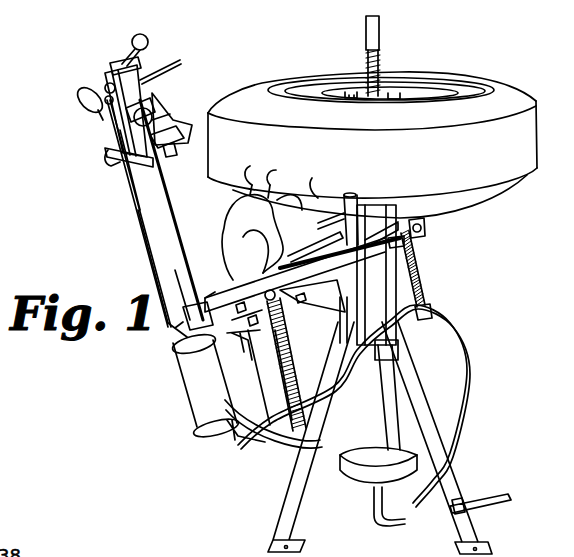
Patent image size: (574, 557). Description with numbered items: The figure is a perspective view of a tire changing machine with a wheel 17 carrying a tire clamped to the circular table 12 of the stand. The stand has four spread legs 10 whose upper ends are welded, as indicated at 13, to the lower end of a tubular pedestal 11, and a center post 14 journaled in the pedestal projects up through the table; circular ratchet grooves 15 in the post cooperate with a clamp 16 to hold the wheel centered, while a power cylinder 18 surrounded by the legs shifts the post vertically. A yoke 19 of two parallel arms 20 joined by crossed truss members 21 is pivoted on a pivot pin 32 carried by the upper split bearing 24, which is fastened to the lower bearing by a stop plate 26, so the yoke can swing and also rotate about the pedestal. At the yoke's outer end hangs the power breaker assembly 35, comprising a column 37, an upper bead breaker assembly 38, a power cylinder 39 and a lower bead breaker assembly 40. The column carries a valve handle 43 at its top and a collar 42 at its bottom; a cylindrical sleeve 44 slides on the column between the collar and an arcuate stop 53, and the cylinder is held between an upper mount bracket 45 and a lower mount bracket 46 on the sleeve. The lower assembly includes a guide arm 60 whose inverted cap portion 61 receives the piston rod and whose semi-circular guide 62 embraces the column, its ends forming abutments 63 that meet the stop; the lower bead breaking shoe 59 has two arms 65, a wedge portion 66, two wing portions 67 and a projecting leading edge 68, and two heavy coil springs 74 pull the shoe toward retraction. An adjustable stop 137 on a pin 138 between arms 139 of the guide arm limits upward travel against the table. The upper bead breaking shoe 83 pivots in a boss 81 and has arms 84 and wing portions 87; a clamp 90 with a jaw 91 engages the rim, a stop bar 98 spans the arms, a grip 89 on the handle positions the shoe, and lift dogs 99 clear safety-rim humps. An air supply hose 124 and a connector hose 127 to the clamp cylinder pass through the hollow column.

The leg 10 is at (300, 512).
The pedestal 11 is at (416, 283).
The circular table 12 is at (470, 197).
The weld 13 is at (402, 363).
The center post 14 is at (379, 24).
The circular ratchet grooves 15 is at (381, 63).
The clamp 16 is at (388, 93).
The wheel 17 is at (456, 89).
The power cylinder 18 is at (375, 480).
The yoke 19 is at (406, 248).
The yoke arm 20 is at (396, 283).
The truss member 21 is at (350, 208).
The upper split bearing 24 is at (375, 220).
The stop plate 26 is at (347, 337).
The pivot pin 32 is at (427, 228).
The power breaker assembly 35 is at (152, 255).
The column 37 is at (146, 208).
The upper bead breaker assembly 38 is at (98, 66).
The power cylinder 39 is at (293, 442).
The lower bead breaker assembly 40 is at (204, 240).
The collar 42 is at (200, 437).
The handle 43 is at (130, 42).
The cylindrical sleeve 44 is at (198, 400).
The upper mount bracket 45 is at (242, 352).
The lower mount bracket 46 is at (263, 445).
The stop 53 is at (156, 280).
The lower bead breaking shoe 59 is at (229, 199).
The guide arm 60 is at (240, 290).
The inverted cap portion 61 is at (194, 344).
The column engaging guide 62 is at (186, 308).
The abutment 63 is at (178, 330).
The arm 65 is at (232, 262).
The wedge portion 66 is at (266, 186).
The wing portion 67 is at (250, 180).
The leading edge 68 is at (286, 192).
The coil spring 74 is at (288, 370).
The boss 81 is at (118, 64).
The upper bead breaking shoe 83 is at (165, 115).
The arm 84 is at (140, 73).
The wing portion 87 is at (172, 121).
The grip 89 is at (78, 97).
The clamp 90 is at (162, 120).
The jaw 91 is at (170, 150).
The stop bar 98 is at (161, 103).
The lift dog 99 is at (107, 155).
The air supply hose 124 is at (497, 496).
The connector hose 127 is at (405, 527).
The adjustable stop 137 is at (281, 231).
The pin 138 is at (287, 268).
The arm 139 is at (288, 256).